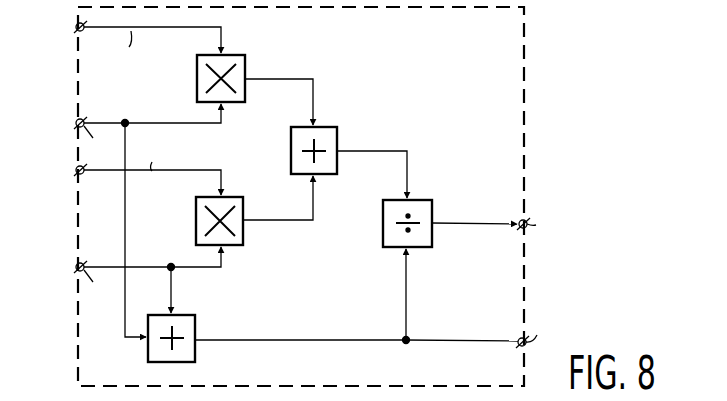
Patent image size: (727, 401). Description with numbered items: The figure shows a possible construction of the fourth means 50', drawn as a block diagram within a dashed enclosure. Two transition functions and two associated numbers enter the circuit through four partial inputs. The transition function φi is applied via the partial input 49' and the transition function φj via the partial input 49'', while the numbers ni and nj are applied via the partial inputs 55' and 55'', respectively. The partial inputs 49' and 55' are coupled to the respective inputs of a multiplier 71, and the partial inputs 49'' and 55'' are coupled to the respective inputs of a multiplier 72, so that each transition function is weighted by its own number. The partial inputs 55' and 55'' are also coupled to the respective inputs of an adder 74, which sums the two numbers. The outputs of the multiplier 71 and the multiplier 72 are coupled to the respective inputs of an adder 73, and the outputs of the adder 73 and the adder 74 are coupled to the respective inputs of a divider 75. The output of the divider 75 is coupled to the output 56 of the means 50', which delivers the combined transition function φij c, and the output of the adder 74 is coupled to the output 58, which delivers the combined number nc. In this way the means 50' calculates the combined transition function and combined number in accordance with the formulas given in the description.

The fourth means 50' is at (319, 196).
The partial input 49' is at (128, 35).
The partial input 55' is at (128, 220).
The partial input 49'' is at (128, 166).
The partial input 55'' is at (128, 280).
The multiplier 71 is at (247, 64).
The multiplier 72 is at (244, 209).
The adder 73 is at (339, 138).
The adder 74 is at (196, 331).
The divider 75 is at (433, 215).
The output 56 is at (519, 221).
The output 58 is at (517, 346).